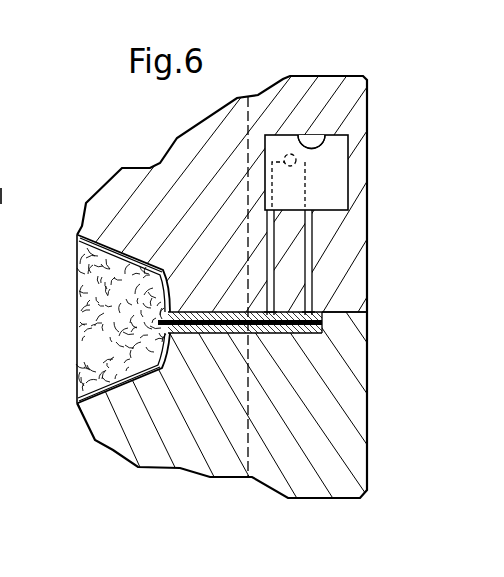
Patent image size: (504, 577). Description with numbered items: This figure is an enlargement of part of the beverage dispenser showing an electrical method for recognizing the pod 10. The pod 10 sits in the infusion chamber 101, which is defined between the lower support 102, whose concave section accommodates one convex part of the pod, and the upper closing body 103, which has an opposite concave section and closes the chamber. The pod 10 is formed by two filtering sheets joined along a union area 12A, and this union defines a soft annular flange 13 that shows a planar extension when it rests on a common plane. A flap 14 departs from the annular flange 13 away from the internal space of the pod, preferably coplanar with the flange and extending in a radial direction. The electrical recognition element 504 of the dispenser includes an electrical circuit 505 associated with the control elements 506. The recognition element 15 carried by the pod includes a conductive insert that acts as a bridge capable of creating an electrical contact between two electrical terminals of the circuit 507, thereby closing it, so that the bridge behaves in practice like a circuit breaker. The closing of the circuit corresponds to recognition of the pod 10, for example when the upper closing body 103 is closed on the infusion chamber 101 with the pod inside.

The pod 10 is at (71, 322).
The infusion chamber 101 is at (113, 236).
The lower support 102 is at (192, 458).
The upper closing body 103 is at (185, 170).
The union area 12A is at (201, 311).
The annular flange 13 is at (212, 334).
The flap 14 is at (286, 331).
The recognition element 15 is at (340, 316).
The electrical recognition element 504 is at (348, 177).
The electrical circuit 505 is at (306, 173).
The control elements 506 is at (326, 136).
The circuit 507 is at (274, 297).